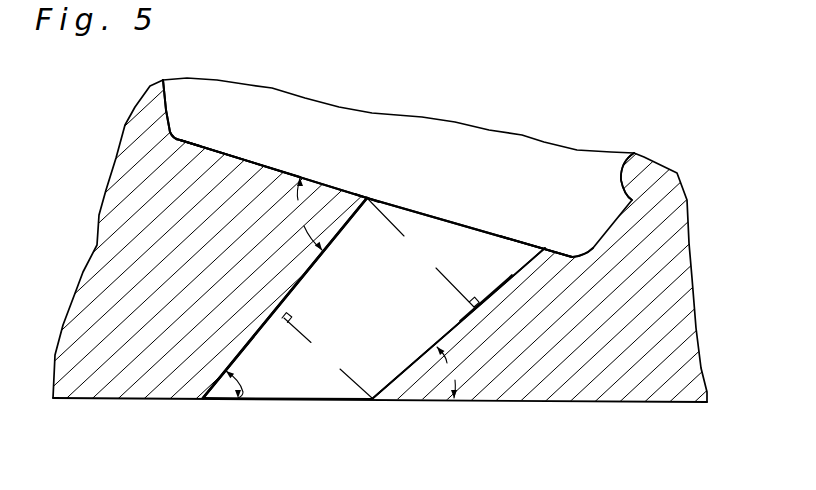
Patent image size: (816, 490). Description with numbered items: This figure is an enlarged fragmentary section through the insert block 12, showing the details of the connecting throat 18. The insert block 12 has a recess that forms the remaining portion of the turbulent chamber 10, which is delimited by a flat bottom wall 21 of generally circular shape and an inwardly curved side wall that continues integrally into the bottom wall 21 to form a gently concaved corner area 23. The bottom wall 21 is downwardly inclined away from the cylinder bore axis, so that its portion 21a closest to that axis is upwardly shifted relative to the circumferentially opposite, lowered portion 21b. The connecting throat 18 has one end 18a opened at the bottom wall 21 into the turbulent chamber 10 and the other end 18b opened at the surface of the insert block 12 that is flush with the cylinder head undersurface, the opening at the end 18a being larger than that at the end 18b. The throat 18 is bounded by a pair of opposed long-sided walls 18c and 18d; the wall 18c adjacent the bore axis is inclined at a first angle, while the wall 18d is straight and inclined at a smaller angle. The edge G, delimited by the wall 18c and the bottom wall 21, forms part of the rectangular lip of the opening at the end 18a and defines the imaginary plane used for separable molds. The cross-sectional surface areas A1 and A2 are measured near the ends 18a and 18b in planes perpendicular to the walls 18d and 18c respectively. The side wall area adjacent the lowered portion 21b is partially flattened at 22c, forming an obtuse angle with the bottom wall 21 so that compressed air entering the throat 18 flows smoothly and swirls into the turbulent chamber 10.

The turbulent chamber 10 is at (482, 171).
The insert block 12 is at (178, 242).
The connecting throat 18 is at (372, 283).
The end of the throat 18a is at (493, 233).
The end of the throat 18b is at (325, 398).
The long-sided wall 18c is at (291, 292).
The long-sided wall 18d is at (487, 294).
The bottom wall 21 is at (320, 183).
The portion of the bottom wall 21a is at (224, 156).
The portion of the bottom wall 21b is at (570, 255).
The flattened area of the side wall 22c is at (634, 153).
The concaved corner area 23 is at (178, 132).
The edge G is at (367, 198).
The cross-sectional surface area A1 is at (423, 252).
The cross-sectional surface area A2 is at (327, 355).